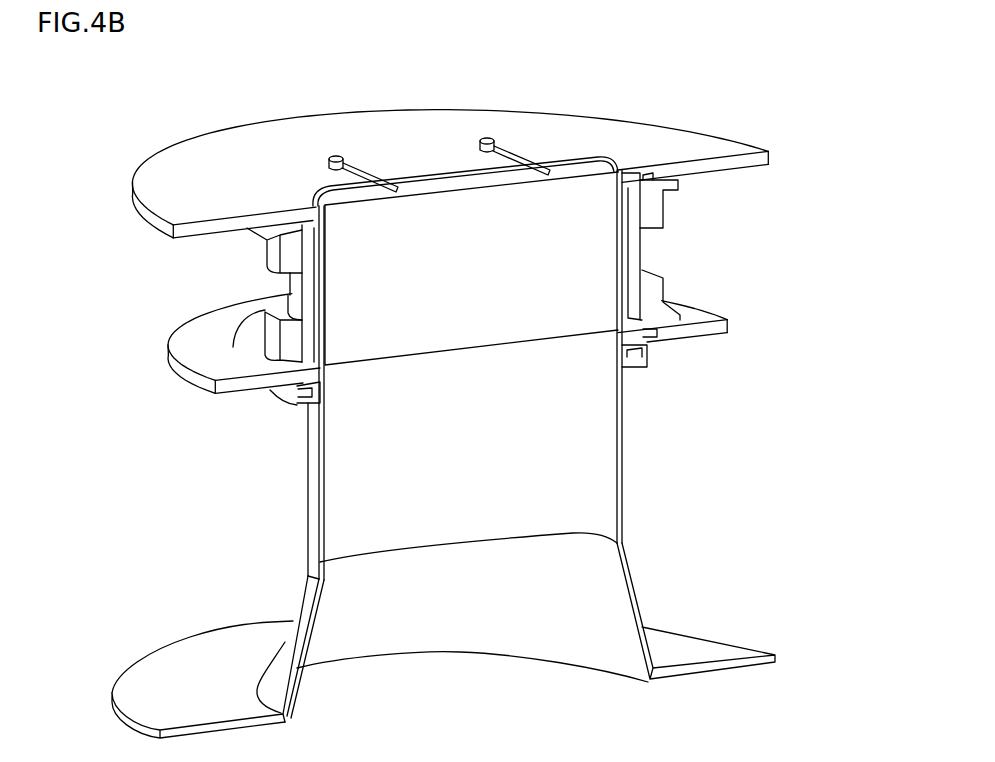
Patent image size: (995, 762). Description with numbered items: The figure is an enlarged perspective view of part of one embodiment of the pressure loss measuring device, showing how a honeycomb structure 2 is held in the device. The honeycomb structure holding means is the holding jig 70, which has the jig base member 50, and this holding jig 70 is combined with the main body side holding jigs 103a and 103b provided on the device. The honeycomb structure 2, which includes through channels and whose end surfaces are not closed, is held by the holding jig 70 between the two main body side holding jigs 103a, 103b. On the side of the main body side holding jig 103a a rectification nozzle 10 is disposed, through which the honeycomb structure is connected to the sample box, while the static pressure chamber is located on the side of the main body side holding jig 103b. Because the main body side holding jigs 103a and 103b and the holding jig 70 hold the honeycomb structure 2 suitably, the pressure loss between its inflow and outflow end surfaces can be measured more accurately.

The honeycomb structure 2 is at (570, 197).
The rectification nozzle 10 is at (617, 587).
The jig base member 50 is at (637, 253).
The holding jig 70 is at (494, 289).
The main body side holding jig 103a is at (728, 326).
The main body side holding jig 103b is at (769, 157).